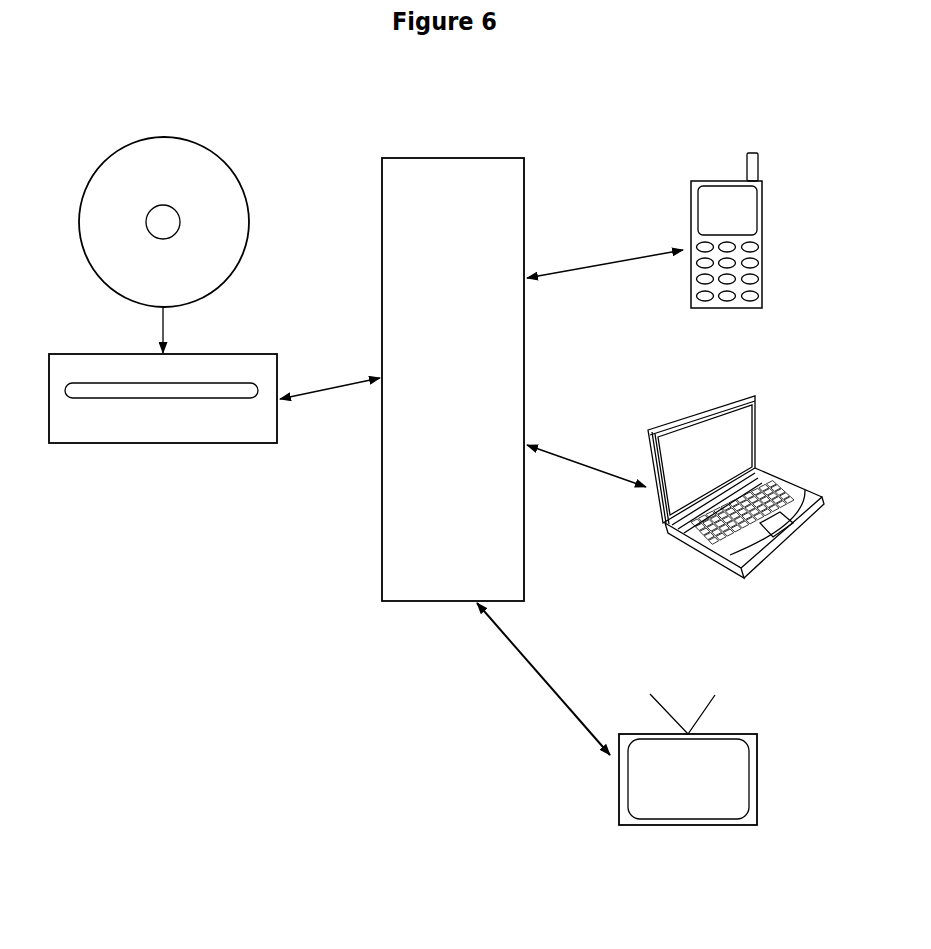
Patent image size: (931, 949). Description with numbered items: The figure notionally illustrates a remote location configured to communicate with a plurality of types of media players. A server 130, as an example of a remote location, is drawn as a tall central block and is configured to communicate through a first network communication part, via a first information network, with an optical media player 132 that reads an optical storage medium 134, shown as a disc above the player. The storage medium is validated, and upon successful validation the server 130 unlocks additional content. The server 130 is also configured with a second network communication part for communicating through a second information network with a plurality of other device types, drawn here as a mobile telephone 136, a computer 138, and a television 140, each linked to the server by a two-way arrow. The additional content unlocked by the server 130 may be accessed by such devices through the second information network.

The server 130 is at (453, 379).
The optical media player 132 is at (163, 398).
The optical storage medium 134 is at (164, 245).
The mobile telephone 136 is at (749, 230).
The computer 138 is at (736, 487).
The television 140 is at (688, 775).